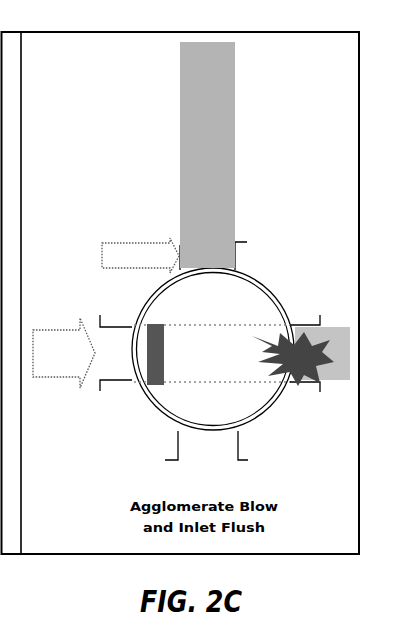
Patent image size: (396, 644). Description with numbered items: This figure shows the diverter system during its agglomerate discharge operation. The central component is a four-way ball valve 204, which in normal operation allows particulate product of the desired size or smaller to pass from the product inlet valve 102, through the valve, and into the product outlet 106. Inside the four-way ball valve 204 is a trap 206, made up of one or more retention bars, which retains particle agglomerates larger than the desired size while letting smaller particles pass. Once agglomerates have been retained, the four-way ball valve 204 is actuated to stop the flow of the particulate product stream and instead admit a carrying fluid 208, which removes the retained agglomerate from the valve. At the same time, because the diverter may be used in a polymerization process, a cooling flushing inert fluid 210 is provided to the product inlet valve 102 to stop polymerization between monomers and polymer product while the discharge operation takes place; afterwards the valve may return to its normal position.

The product inlet valve 102 is at (235, 120).
The product outlet 106 is at (222, 448).
The four-way ball valve 204 is at (276, 262).
The trap 206 is at (150, 384).
The carrying fluid 208 is at (64, 353).
The cooling flushing inert fluid 210 is at (152, 242).